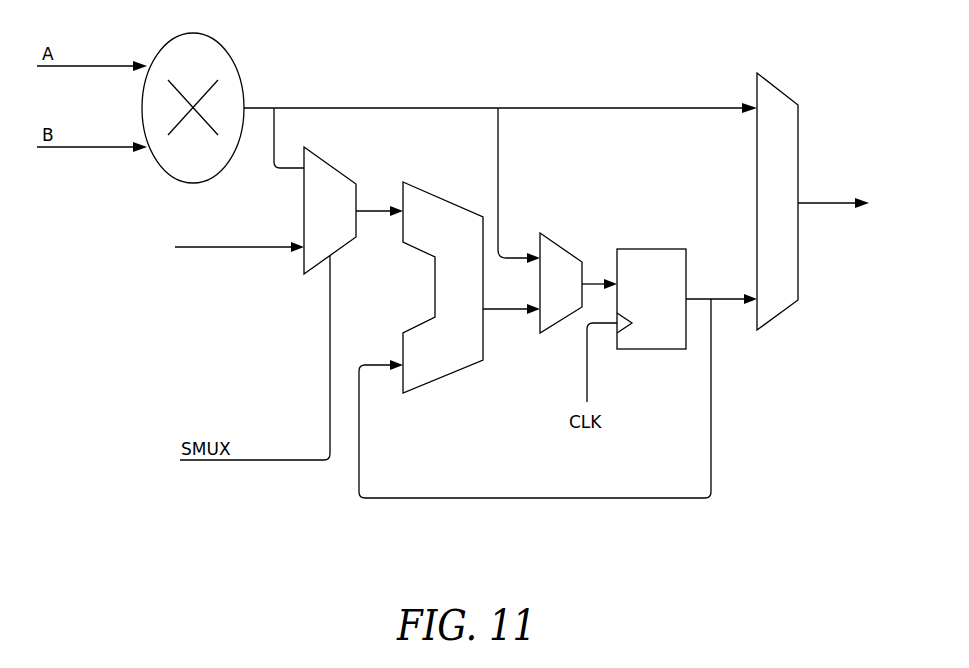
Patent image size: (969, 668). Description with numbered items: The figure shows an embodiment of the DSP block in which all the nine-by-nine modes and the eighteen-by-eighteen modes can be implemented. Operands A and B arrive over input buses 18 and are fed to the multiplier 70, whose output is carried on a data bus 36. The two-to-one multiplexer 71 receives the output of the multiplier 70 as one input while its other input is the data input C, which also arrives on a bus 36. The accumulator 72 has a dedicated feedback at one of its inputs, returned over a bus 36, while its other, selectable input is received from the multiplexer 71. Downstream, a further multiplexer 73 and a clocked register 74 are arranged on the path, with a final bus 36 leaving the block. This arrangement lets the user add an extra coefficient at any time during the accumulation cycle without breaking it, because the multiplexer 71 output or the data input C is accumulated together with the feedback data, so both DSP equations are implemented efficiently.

The input bus (A/B operand) 18 is at (86, 79).
The data bus 36 is at (238, 232).
The multiplier 70 is at (220, 39).
The 2:1 multiplexer 71 is at (773, 88).
The accumulator 72 is at (447, 197).
The multiplexer 73 is at (563, 245).
The register 74 is at (670, 350).